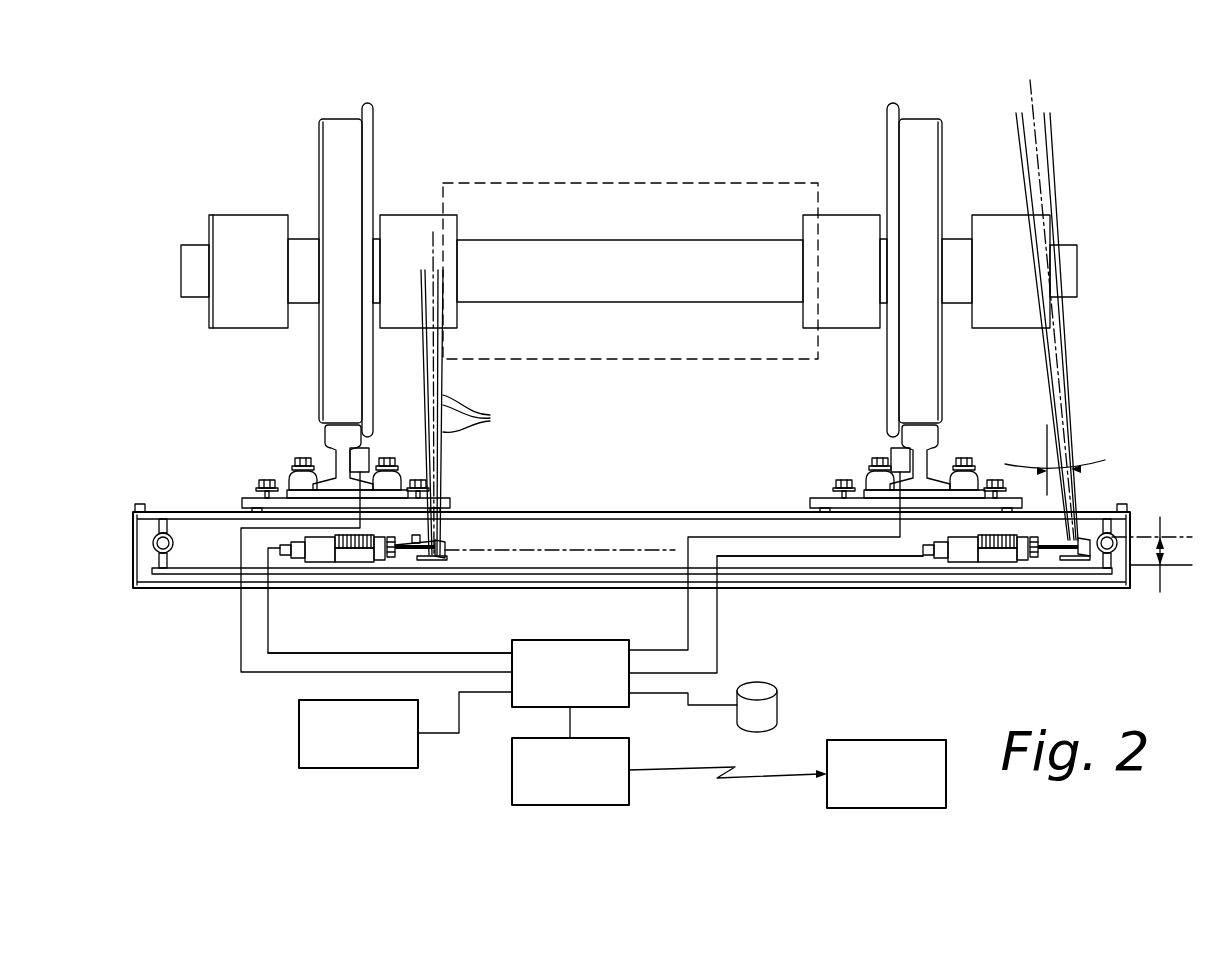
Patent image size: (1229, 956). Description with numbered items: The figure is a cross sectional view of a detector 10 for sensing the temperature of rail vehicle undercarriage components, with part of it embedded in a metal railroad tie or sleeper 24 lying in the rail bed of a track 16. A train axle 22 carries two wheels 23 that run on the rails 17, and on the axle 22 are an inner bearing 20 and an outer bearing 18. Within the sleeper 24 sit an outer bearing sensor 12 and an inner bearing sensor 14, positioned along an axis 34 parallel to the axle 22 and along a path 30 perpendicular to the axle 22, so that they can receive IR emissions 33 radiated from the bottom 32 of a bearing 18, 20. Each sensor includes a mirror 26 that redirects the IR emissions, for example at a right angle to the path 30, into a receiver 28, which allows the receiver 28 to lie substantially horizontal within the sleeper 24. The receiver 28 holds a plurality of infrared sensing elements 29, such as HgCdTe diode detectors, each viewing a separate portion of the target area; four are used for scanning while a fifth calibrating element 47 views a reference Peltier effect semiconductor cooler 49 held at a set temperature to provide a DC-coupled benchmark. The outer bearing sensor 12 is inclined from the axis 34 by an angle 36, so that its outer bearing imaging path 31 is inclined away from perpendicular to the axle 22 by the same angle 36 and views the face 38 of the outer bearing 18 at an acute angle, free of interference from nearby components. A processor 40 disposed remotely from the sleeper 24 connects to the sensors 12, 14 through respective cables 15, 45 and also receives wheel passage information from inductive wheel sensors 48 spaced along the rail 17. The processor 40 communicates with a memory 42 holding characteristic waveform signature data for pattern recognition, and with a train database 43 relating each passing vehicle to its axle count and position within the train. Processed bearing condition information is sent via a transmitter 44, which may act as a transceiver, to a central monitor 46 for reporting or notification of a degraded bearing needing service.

The detector 10 is at (244, 698).
The outer bearing sensor 12 is at (998, 575).
The inner bearing sensor 14 is at (388, 572).
The cable 15 is at (793, 572).
The track 16 is at (622, 480).
The rail 17 is at (328, 447).
The outer bearing 18 is at (258, 328).
The inner bearing 20 is at (414, 214).
The train axle 22 is at (630, 240).
The wheel 23 is at (375, 123).
The sleeper 24 is at (200, 512).
The mirror 26 is at (445, 556).
The receiver 28 is at (318, 562).
The infrared sensing element 29 is at (356, 565).
The path 30 is at (440, 376).
The outer bearing imaging path 31 is at (1035, 93).
The bottom of bearing 32 is at (415, 328).
The IR emissions 33 is at (482, 413).
The axis 34 is at (577, 548).
The angle 36 is at (1047, 470).
The face of outer bearing 38 is at (1050, 235).
The processor 40 is at (620, 690).
The memory 42 is at (350, 742).
The train database 43 is at (768, 712).
The transmitter 44 is at (535, 777).
The cable 45 is at (452, 652).
The central monitor 46 is at (897, 758).
The calibrating element 47 is at (420, 538).
The wheel sensor 48 is at (598, 183).
The Peltier effect semiconductor cooler 49 is at (440, 552).